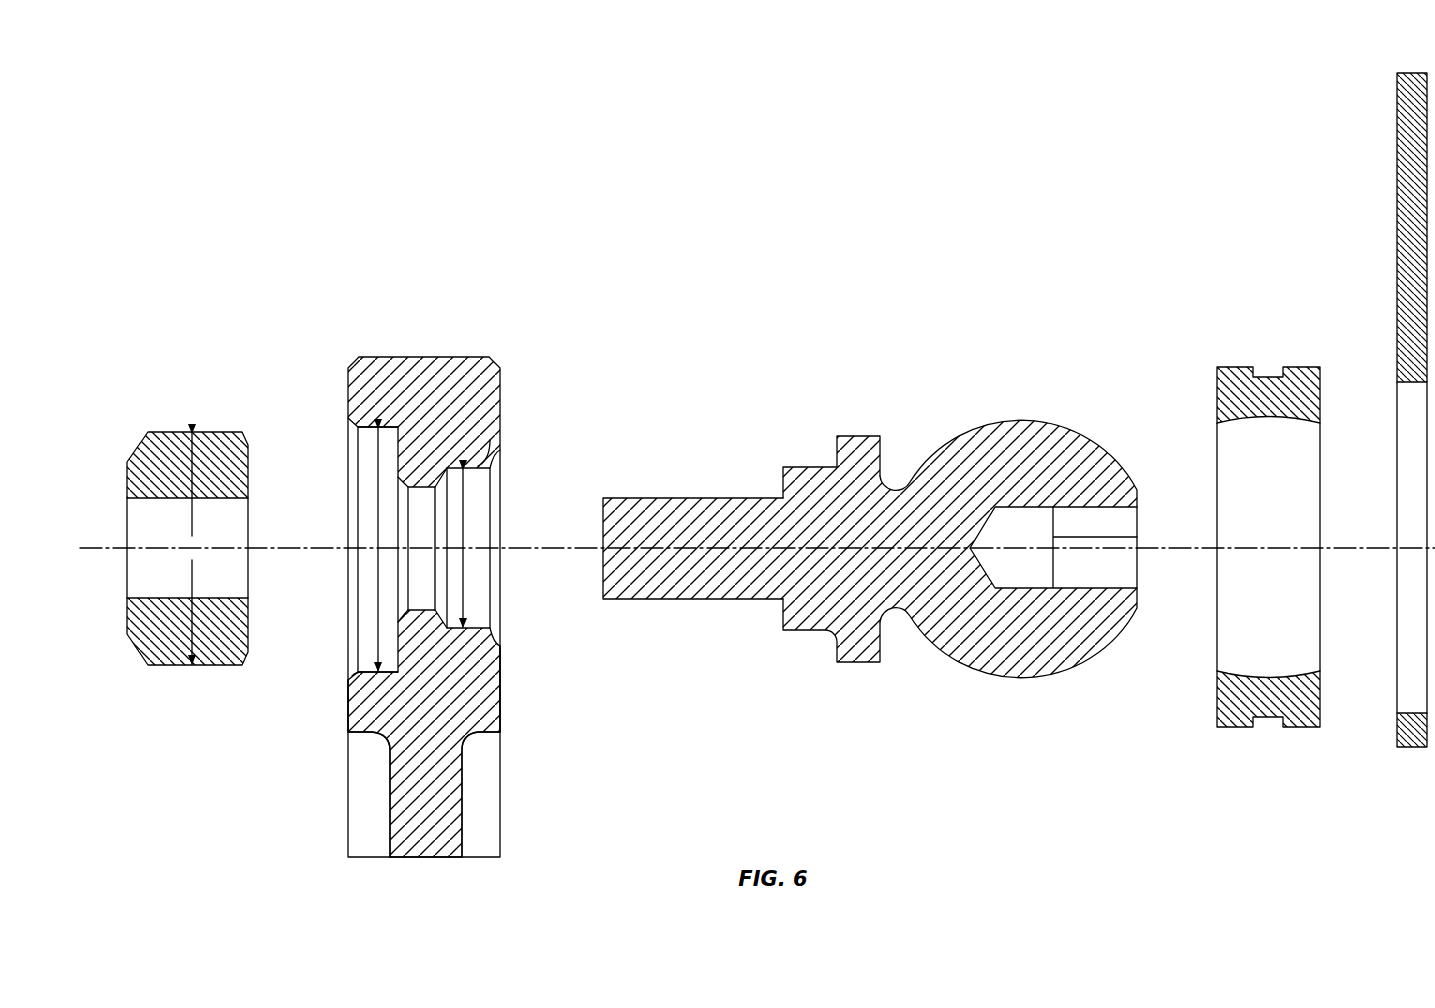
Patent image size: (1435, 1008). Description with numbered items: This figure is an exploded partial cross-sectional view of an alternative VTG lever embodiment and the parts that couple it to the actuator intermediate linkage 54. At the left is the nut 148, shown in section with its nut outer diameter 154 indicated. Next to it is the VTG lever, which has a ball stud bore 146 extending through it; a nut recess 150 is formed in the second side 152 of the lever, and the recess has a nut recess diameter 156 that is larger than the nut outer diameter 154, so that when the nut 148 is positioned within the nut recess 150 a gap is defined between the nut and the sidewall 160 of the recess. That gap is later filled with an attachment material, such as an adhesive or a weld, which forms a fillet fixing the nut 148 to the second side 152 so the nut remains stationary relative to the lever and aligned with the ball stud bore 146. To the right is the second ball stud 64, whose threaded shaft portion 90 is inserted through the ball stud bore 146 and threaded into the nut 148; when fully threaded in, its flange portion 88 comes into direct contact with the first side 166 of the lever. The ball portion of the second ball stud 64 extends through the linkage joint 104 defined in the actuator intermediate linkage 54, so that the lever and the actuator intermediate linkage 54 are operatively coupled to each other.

The actuator intermediate linkage 54 is at (1412, 73).
The second ball stud 64 is at (1040, 420).
The flange portion 88 is at (856, 436).
The threaded shaft portion 90 is at (653, 498).
The linkage joint 104 is at (1320, 460).
The ball stud bore 146 is at (487, 433).
The nut 148 is at (150, 448).
The nut recess 150 is at (352, 676).
The second side 152 is at (348, 714).
The nut outer diameter 154 is at (192, 548).
The nut recess diameter 156 is at (380, 575).
The sidewall 160 is at (379, 426).
The first side 166 is at (467, 393).